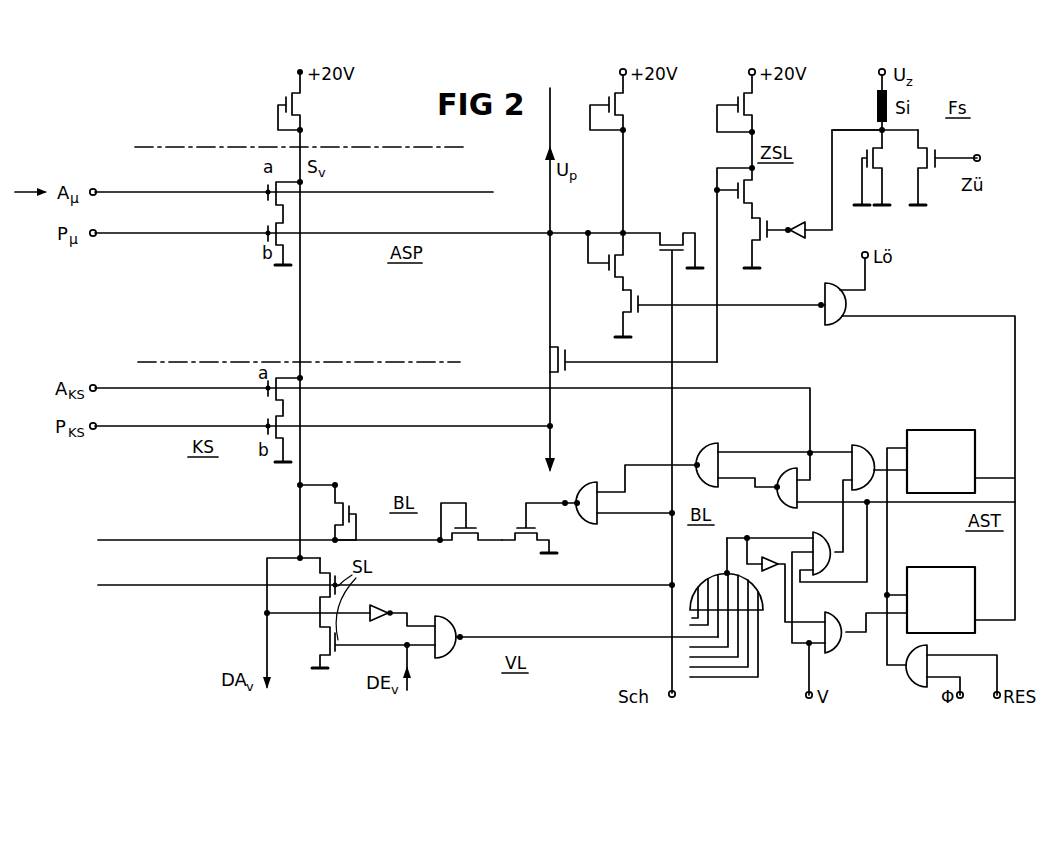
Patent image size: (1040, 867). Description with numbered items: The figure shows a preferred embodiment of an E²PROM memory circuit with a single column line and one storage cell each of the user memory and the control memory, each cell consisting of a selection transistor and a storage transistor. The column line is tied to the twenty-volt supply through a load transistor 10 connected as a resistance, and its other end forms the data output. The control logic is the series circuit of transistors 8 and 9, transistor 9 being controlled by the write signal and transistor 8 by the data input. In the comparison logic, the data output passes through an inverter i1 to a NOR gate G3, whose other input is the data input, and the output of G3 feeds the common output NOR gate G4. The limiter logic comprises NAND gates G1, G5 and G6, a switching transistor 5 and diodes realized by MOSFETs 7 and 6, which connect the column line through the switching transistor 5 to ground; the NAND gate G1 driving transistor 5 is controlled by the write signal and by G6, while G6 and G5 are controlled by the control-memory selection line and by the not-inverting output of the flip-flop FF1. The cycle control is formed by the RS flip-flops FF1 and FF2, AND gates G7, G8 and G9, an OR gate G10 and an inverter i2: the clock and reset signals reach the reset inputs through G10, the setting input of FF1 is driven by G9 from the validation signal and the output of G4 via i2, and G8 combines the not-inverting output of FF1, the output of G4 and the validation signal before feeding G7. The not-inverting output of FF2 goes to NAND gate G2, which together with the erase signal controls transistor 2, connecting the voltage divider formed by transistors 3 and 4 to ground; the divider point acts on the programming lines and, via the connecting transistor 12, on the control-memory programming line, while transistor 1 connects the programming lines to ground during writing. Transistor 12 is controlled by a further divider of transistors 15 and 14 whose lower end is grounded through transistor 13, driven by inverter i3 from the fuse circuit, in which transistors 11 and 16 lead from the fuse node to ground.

The self-blocking MOS field-effect transistor 1 is at (681, 450).
The self-blocking MOS field-effect transistor 2 is at (715, 313).
The self-blocking MOS field-effect transistor 3 is at (615, 261).
The self-conducting MOSFET 4 is at (615, 154).
The switching transistor 5 is at (539, 530).
The further diode 6 is at (471, 530).
The diode 7 is at (328, 512).
The self-blocking MOS field-effect transistor 8 is at (369, 640).
The self-blocking MOS field-effect transistor 9 is at (319, 585).
The MOS field-effect transistor 10 is at (303, 101).
The transistor 11 is at (940, 167).
The connecting transistor 12 is at (620, 362).
The self-blocking transistor 13 is at (758, 243).
The transistor 14 is at (748, 193).
The self-conducting MOS field-effect transistor 15 is at (748, 121).
The transistor 16 is at (878, 176).
The NAND gate G1 is at (588, 482).
The NAND gate G2 is at (829, 296).
The NOR gate G3 is at (450, 626).
The NOR gate G4 is at (712, 578).
The NAND gate G5 is at (780, 500).
The NAND gate G6 is at (709, 445).
The AND gate G7 is at (857, 445).
The AND gate G8 is at (826, 545).
The AND gate G9 is at (826, 617).
The OR gate G10 is at (902, 676).
The inverter i1 is at (372, 621).
The inverter i2 is at (771, 577).
The inverter i3 is at (809, 242).
The RS flip-flop FF1 is at (948, 569).
The RS flip-flop FF2 is at (948, 432).